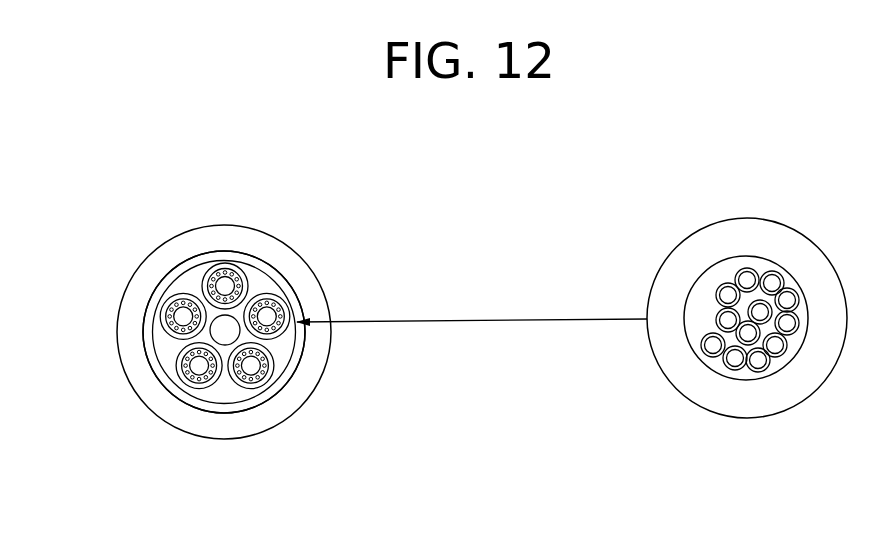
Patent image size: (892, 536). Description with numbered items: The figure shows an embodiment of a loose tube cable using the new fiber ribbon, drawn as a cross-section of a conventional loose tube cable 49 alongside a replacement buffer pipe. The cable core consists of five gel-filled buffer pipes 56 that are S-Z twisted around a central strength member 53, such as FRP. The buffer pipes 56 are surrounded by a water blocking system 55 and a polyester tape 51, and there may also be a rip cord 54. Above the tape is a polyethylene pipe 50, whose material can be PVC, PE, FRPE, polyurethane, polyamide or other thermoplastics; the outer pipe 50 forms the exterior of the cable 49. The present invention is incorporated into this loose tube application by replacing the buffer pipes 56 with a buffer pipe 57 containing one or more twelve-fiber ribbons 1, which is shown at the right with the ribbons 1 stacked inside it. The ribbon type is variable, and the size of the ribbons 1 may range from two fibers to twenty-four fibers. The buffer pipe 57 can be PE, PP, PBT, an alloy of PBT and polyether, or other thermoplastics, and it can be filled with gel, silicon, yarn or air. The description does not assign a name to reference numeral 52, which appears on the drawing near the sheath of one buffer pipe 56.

The loose tube cable 49 is at (113, 298).
The polyethylene pipe 50 is at (220, 240).
The polyester tape 51 is at (256, 255).
The sub-unit jacket 52 is at (240, 278).
The central strength member 53 is at (256, 338).
The rip cord 54 is at (296, 371).
The water blocking system 55 is at (251, 405).
The gel-filled buffer pipe 56 is at (207, 389).
The buffer pipe 57 is at (730, 231).
The fiber ribbon 1 is at (745, 364).